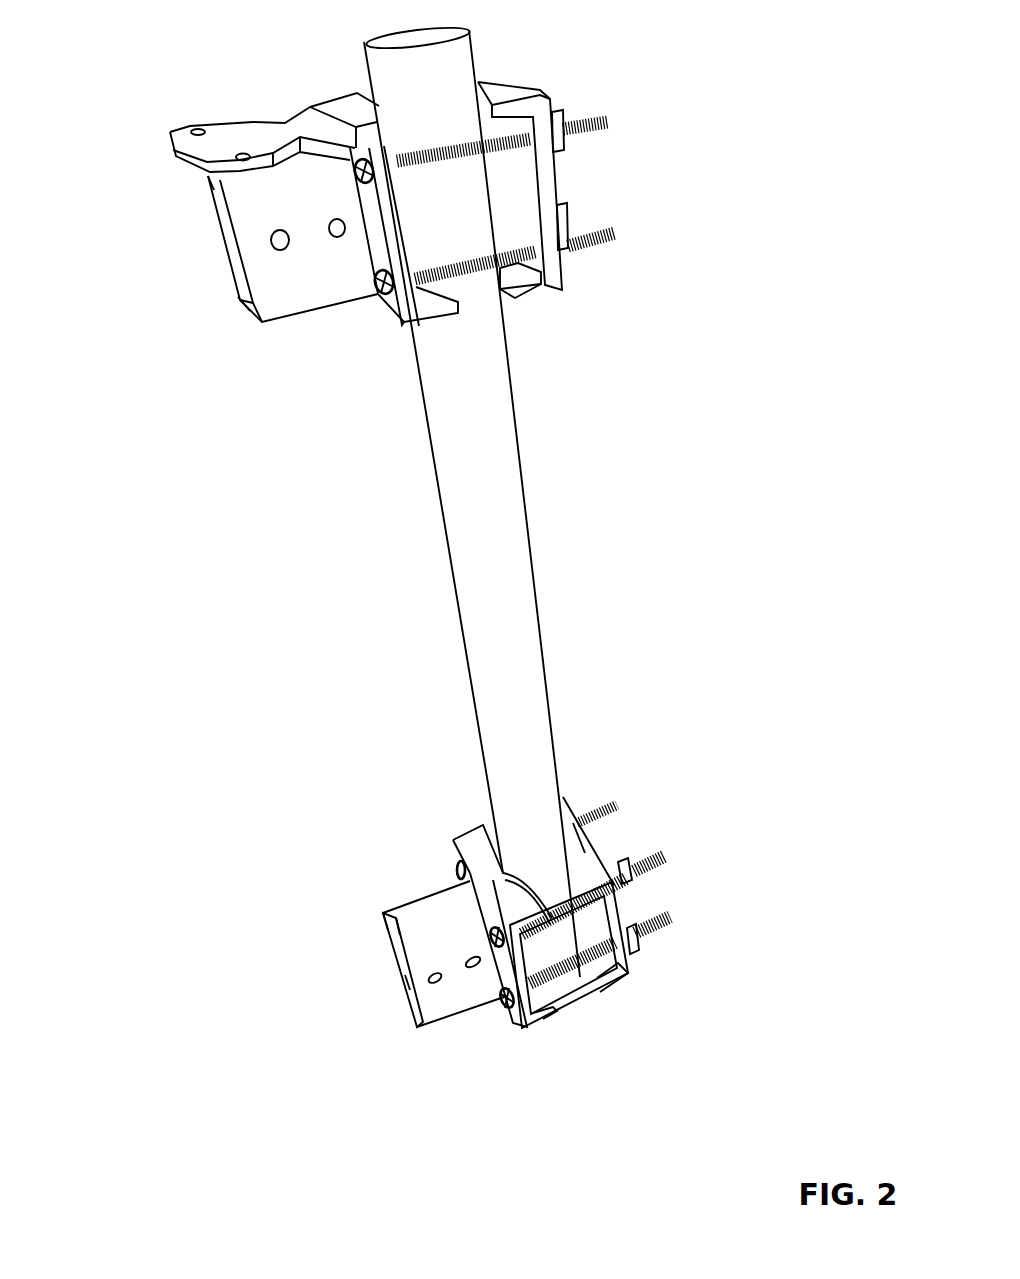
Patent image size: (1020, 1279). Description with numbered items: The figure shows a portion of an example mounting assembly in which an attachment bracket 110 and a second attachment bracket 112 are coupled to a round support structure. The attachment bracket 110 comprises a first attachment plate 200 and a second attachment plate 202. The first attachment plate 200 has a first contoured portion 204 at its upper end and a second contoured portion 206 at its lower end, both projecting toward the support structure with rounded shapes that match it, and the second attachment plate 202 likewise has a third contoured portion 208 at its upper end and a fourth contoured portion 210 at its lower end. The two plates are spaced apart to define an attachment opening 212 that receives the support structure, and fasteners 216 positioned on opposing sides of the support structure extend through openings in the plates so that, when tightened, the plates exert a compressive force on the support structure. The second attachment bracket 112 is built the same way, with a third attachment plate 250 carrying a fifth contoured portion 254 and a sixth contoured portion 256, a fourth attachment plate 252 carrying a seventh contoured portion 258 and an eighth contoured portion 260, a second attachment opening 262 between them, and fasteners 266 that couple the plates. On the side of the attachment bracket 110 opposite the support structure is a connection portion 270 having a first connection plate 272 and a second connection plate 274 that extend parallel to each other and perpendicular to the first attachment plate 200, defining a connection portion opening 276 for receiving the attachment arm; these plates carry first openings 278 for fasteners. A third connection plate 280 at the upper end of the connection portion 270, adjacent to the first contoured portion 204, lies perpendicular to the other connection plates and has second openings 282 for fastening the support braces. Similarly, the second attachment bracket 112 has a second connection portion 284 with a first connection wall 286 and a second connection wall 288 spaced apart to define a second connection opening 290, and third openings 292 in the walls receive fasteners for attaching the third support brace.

The attachment bracket 110 is at (258, 66).
The second attachment bracket 112 is at (388, 862).
The first attachment plate 200 is at (380, 300).
The second attachment plate 202 is at (553, 175).
The first contoured portion 204 is at (372, 98).
The second contoured portion 206 is at (425, 330).
The third contoured portion 208 is at (478, 97).
The fourth contoured portion 210 is at (518, 281).
The attachment opening 212 is at (520, 180).
The fasteners 216 is at (617, 232).
The third attachment plate 250 is at (477, 837).
The fourth attachment plate 252 is at (580, 812).
The fifth contoured portion 254 is at (457, 840).
The sixth contoured portion 256 is at (550, 1010).
The seventh contoured portion 258 is at (572, 855).
The eighth contoured portion 260 is at (580, 923).
The second attachment opening 262 is at (555, 963).
The fasteners 266 is at (663, 862).
The connection portion 270 is at (150, 112).
The first connection plate 272 is at (273, 283).
The second connection plate 274 is at (227, 237).
The connection portion opening 276 is at (242, 282).
The first openings 278 is at (270, 238).
The third connection plate 280 is at (243, 137).
The second openings 282 is at (215, 157).
The second connection portion 284 is at (352, 932).
The first connection wall 286 is at (413, 992).
The second connection wall 288 is at (395, 965).
The second connection opening 290 is at (393, 980).
The third openings 292 is at (432, 985).